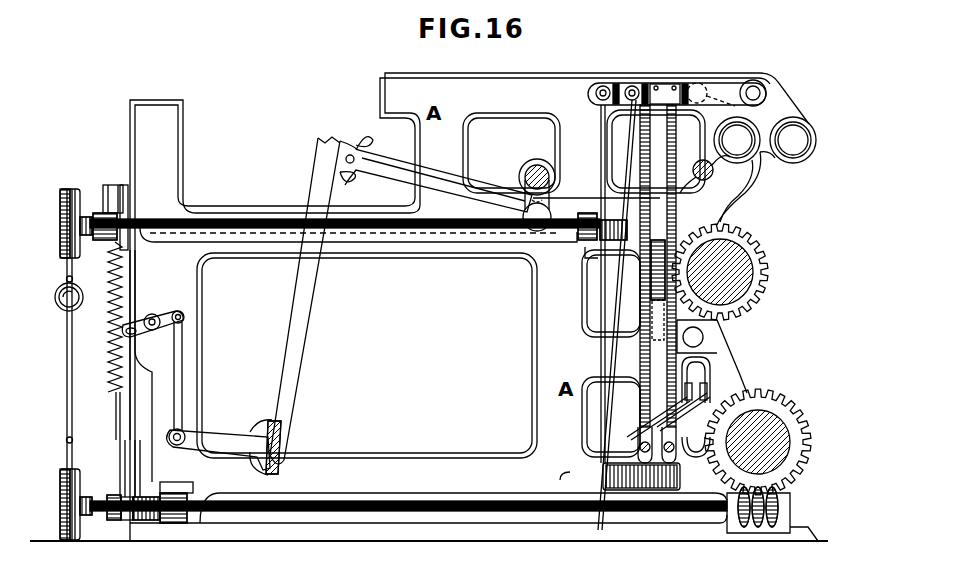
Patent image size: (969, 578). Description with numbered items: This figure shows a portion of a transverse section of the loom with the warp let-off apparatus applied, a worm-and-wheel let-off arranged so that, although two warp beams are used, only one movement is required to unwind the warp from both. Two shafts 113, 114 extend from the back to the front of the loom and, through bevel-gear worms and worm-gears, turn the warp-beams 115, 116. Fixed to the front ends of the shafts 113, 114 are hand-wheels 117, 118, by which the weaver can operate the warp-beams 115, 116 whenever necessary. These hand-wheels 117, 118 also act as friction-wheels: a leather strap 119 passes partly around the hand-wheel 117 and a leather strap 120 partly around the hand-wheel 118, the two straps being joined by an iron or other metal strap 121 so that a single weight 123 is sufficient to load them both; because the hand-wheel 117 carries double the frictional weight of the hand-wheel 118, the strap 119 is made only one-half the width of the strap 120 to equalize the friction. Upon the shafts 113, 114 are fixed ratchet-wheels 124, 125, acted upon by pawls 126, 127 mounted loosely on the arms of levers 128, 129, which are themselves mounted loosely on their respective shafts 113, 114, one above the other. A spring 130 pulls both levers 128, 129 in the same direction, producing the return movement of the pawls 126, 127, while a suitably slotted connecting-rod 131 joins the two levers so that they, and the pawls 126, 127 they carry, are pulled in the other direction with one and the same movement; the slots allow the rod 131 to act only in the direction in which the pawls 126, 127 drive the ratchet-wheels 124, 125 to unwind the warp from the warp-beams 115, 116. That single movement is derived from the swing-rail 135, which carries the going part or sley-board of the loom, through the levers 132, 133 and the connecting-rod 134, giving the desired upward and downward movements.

The shaft 113 is at (430, 230).
The shaft 114 is at (398, 505).
The warp-beam 115 is at (750, 273).
The warp-beam 116 is at (768, 406).
The hand-wheel 117 is at (66, 196).
The hand-wheel 118 is at (60, 505).
The leather strap 119 is at (67, 270).
The leather strap 120 is at (70, 462).
The metal strap 121 is at (67, 406).
The weight 123 is at (63, 303).
The ratchet-wheel 124 is at (108, 237).
The ratchet-wheel 125 is at (125, 516).
The pawl 126 is at (110, 194).
The pawl 127 is at (122, 476).
The lever 128 is at (127, 200).
The lever 129 is at (142, 484).
The spring 130 is at (116, 388).
The slotted connecting-rod 131 is at (136, 302).
The lever 132 is at (219, 447).
The lever 133 is at (170, 329).
The connecting-rod 134 is at (184, 378).
The swing-rail 135 is at (272, 474).